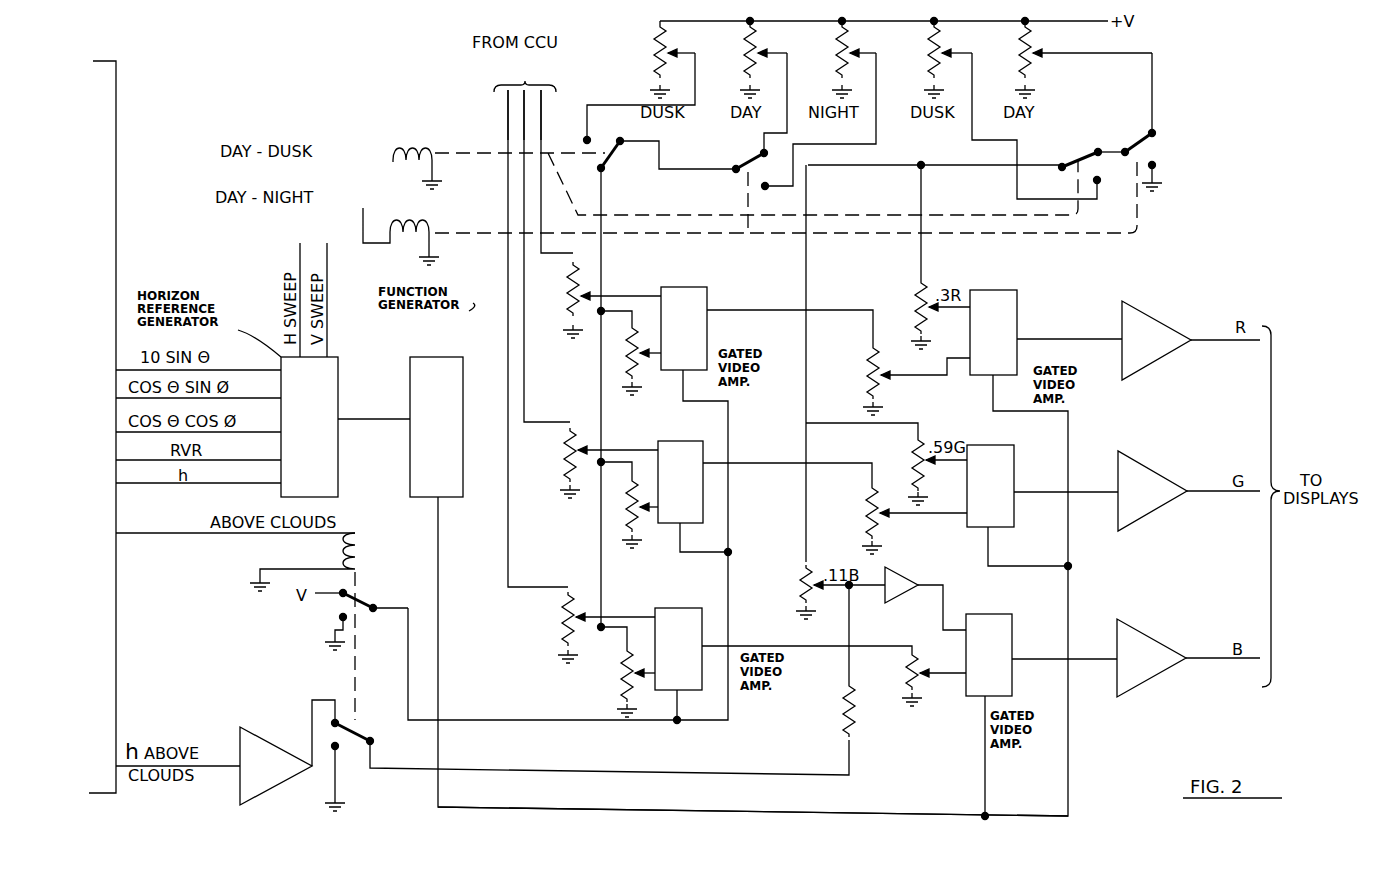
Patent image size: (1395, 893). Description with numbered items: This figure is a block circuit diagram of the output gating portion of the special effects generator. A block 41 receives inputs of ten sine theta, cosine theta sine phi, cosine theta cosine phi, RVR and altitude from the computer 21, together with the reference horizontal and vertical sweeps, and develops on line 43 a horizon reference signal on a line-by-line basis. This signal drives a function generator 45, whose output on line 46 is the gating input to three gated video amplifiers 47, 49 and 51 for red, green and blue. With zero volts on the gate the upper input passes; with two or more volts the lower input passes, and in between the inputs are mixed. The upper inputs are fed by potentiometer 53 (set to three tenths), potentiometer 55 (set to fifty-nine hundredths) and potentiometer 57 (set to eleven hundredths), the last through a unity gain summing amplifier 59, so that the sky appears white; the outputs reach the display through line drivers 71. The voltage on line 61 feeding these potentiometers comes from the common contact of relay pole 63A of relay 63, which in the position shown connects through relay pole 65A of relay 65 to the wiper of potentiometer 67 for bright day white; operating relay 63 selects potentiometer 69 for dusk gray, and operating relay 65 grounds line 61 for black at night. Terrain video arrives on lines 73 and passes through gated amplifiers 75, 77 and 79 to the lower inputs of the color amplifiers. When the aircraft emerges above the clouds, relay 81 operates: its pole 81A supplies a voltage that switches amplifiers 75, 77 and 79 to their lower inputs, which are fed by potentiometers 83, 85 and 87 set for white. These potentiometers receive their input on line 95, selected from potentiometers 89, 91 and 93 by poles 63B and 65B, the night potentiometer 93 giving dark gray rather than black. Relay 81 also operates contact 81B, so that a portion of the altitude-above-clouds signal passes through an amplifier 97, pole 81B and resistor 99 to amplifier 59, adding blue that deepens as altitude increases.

The computer 21 is at (125, 105).
The block 41 is at (338, 378).
The line 43 is at (385, 418).
The function generator 45 is at (432, 357).
The line 46 is at (748, 816).
The gated video amplifier 47 is at (1017, 300).
The gated video amplifier 49 is at (1000, 445).
The gated video amplifier 51 is at (1000, 614).
The potentiometer 53 is at (921, 285).
The potentiometer 55 is at (924, 478).
The potentiometer 57 is at (806, 565).
The unity gain summing amplifier 59 is at (905, 573).
The line 61 is at (808, 283).
The relay 63 is at (413, 138).
The relay pole 63A is at (1065, 165).
The relay pole 63B is at (608, 162).
The relay 65 is at (410, 212).
The relay pole 65A is at (1125, 150).
The relay pole 65B is at (745, 162).
The potentiometer 67 is at (1021, 50).
The potentiometer 69 is at (930, 50).
The line drivers 71 is at (1160, 318).
The lines 73 is at (524, 97).
The gated amplifier 75 is at (707, 345).
The gated amplifier 77 is at (703, 448).
The gated amplifier 79 is at (702, 622).
The relay 81 is at (358, 555).
The pole 81A is at (360, 600).
The contact 81B is at (352, 730).
The potentiometer 83 is at (640, 370).
The potentiometer 85 is at (640, 528).
The potentiometer 87 is at (620, 683).
The potentiometer 89 is at (655, 50).
The potentiometer 91 is at (747, 50).
The potentiometer 93 is at (838, 50).
The line 95 is at (603, 275).
The amplifier 97 is at (258, 730).
The resistor 99 is at (856, 722).